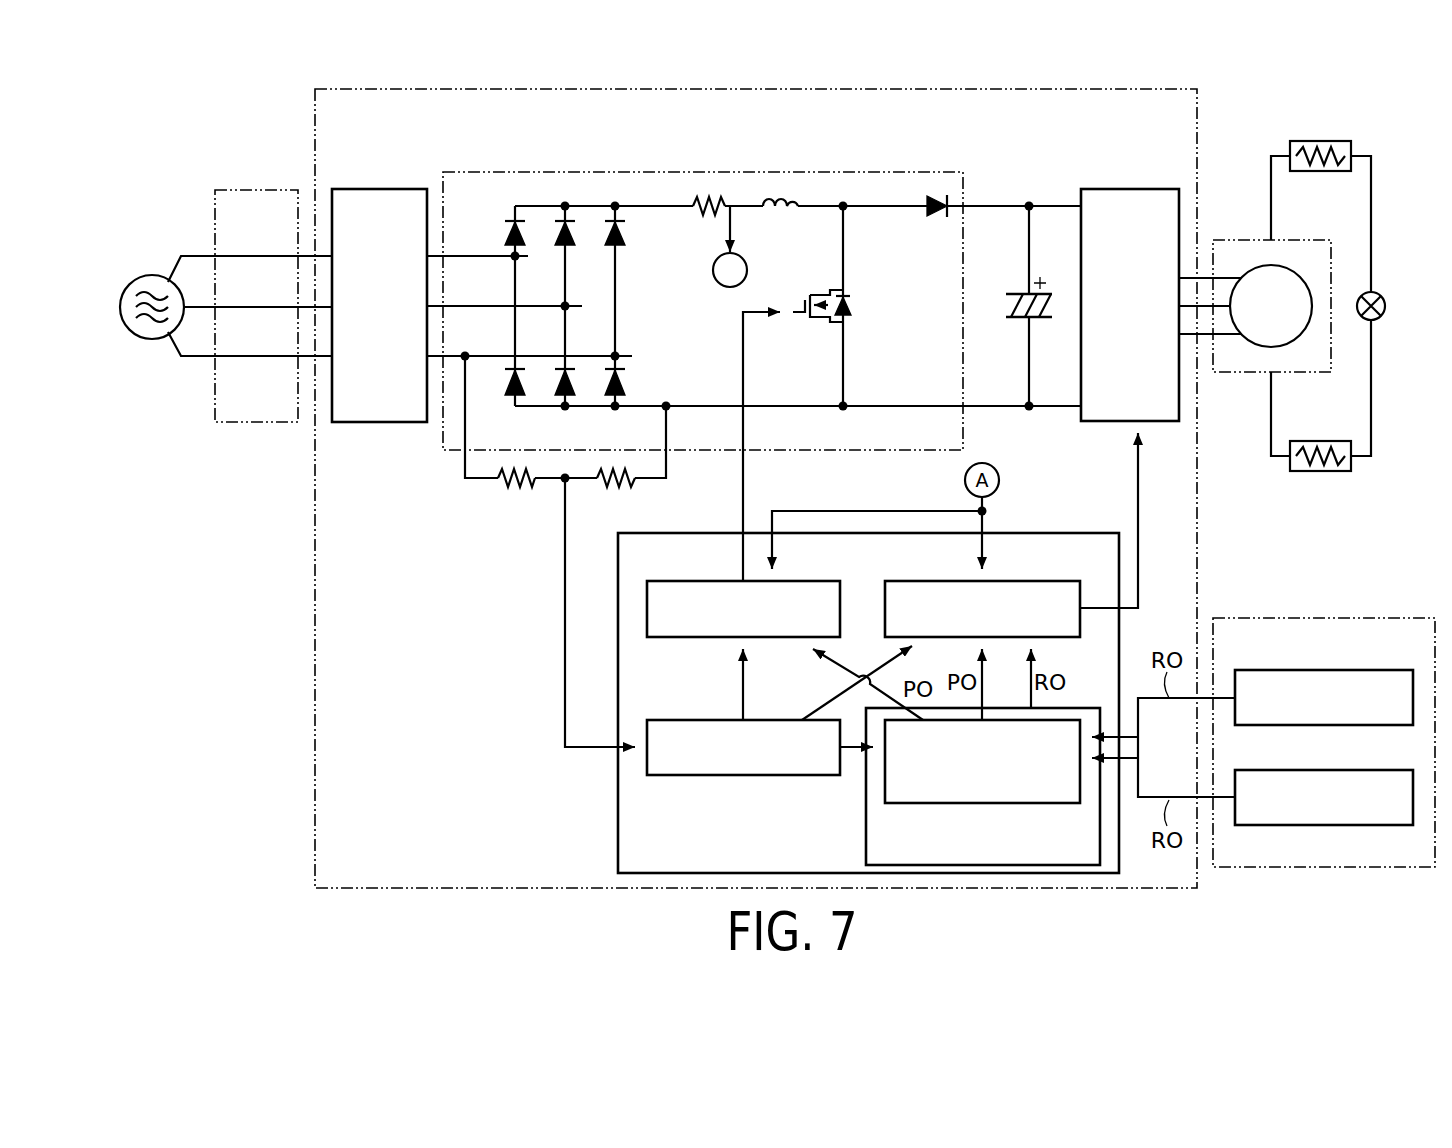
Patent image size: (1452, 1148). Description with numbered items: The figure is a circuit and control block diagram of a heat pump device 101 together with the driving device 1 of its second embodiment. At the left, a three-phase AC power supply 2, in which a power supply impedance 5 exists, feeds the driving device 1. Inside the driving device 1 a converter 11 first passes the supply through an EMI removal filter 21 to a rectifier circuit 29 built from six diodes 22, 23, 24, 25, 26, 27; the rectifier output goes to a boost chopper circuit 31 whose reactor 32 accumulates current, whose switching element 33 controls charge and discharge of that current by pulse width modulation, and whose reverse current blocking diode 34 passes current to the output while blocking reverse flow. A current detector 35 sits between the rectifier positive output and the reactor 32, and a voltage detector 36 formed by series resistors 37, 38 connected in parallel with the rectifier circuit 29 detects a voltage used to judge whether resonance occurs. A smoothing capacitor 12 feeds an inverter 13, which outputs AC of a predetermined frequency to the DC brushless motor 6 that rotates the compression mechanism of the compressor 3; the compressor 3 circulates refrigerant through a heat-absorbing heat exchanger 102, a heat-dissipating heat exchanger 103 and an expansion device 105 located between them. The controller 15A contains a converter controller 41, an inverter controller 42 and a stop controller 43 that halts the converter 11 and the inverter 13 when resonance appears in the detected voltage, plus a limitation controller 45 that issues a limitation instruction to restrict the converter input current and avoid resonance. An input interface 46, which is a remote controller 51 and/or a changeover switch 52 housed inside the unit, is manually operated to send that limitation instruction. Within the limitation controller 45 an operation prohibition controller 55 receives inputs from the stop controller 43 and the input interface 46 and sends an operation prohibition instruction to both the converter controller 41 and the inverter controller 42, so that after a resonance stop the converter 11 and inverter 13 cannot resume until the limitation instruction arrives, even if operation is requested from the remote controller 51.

The driving device 1 is at (313, 102).
The AC power supply 2 is at (155, 274).
The compressor 3 is at (1240, 240).
The power supply impedance 5 is at (258, 189).
The DC brushless motor 6 is at (1255, 345).
The converter 11 is at (465, 172).
The smoothing capacitor 12 is at (1020, 319).
The inverter 13 is at (1136, 187).
The controller 15A is at (606, 778).
The EMI removal filter 21 is at (385, 189).
The diode 22 is at (523, 245).
The diode 23 is at (523, 395).
The diode 24 is at (573, 245).
The diode 25 is at (573, 395).
The diode 26 is at (623, 245).
The diode 27 is at (623, 395).
The rectifier circuit 29 is at (526, 195).
The boost chopper circuit 31 is at (879, 195).
The reactor 32 is at (768, 193).
The switching element 33 is at (822, 290).
The reverse current blocking diode 34 is at (932, 195).
The current detector 35 is at (707, 195).
The voltage detector 36 is at (560, 493).
The resistor 37 is at (504, 489).
The resistor 38 is at (604, 489).
The converter controller 41 is at (798, 581).
The inverter controller 42 is at (1036, 581).
The stop controller 43 is at (797, 776).
The limitation controller 45 is at (866, 841).
The input interface 46 is at (1360, 618).
The remote controller 51 is at (1366, 670).
The changeover switch 52 is at (1366, 770).
The operation prohibition controller 55 is at (1042, 803).
The heat pump device 101 is at (1268, 115).
The heat exchanger 102 is at (1344, 141).
The heat exchanger 103 is at (1344, 471).
The expansion device 105 is at (1385, 306).